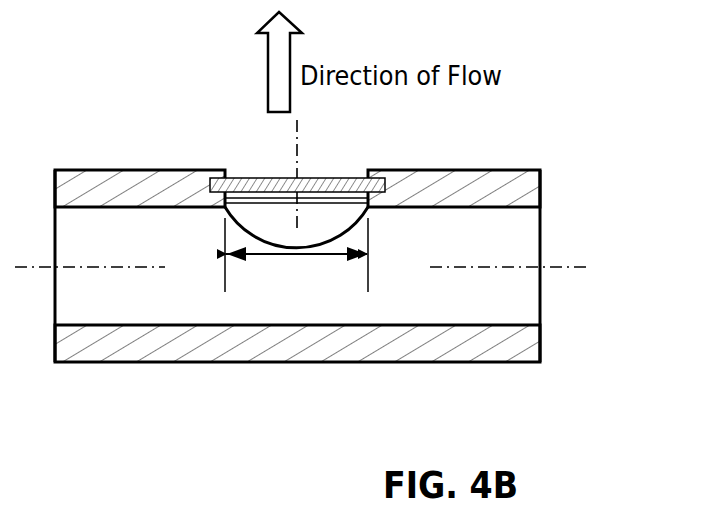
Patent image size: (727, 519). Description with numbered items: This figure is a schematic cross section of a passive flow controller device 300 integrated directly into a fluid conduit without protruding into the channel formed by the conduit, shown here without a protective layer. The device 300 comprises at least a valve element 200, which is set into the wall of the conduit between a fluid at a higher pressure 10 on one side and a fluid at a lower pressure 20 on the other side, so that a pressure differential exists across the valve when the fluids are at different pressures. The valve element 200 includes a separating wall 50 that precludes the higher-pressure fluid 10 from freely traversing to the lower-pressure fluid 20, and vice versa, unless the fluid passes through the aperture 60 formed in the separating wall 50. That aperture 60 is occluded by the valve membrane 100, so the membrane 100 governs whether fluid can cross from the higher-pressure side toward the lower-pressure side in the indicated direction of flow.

The fluid at a higher pressure 10 is at (284, 298).
The fluid at a lower pressure 20 is at (268, 176).
The separating wall 50 is at (196, 168).
The aperture 60 is at (301, 258).
The valve membrane 100 is at (406, 190).
The valve element 200 is at (380, 373).
The passive flow controller device 300 is at (587, 170).